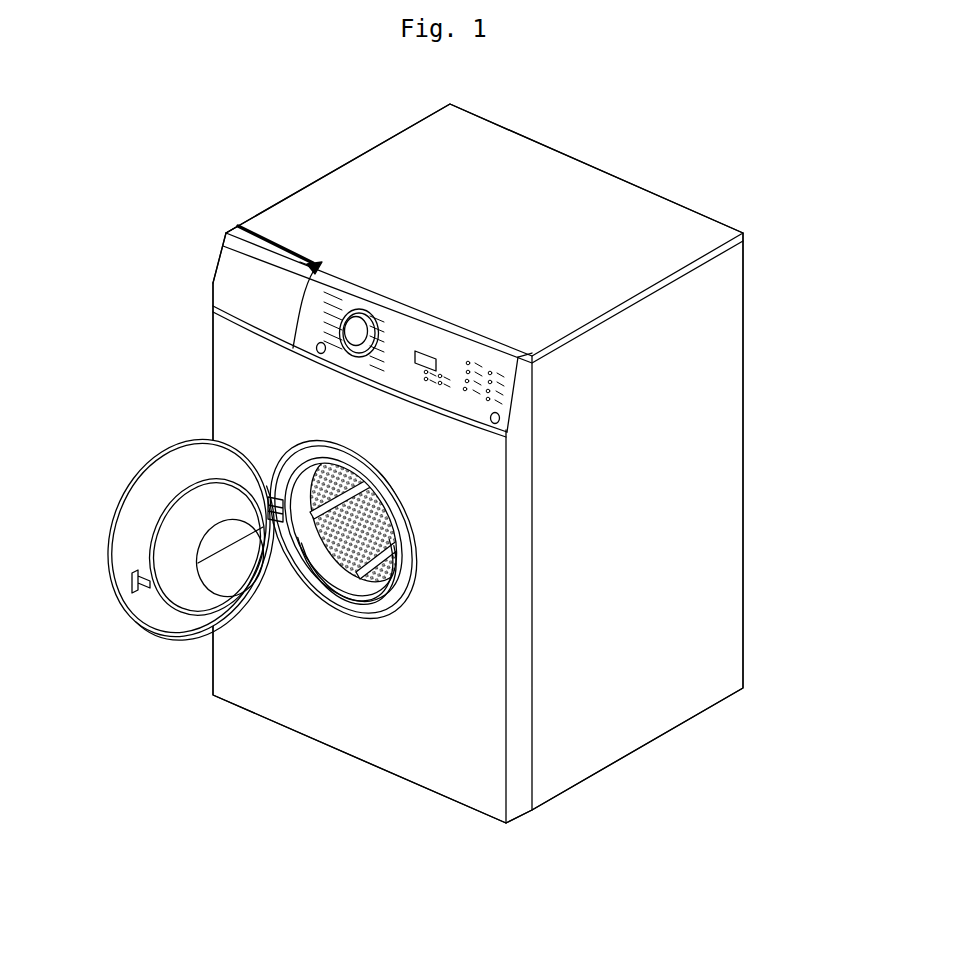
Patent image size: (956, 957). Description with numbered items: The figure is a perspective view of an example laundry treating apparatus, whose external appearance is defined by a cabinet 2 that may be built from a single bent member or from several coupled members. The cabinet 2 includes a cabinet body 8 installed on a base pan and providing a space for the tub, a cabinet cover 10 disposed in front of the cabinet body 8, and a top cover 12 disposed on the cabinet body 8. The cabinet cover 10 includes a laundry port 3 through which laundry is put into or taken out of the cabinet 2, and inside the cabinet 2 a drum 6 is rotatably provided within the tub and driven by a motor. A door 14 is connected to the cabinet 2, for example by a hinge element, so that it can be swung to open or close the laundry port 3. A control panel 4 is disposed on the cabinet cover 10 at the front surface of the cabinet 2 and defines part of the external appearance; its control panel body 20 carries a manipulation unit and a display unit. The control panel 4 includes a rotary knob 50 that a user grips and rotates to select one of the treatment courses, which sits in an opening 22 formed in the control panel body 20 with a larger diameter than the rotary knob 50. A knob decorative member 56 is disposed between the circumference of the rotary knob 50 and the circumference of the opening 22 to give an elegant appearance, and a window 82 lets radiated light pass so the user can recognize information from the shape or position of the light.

The cabinet 2 is at (752, 670).
The laundry port 3 is at (323, 563).
The control panel 4 is at (520, 395).
The drum 6 is at (375, 527).
The cabinet body 8 is at (643, 732).
The cabinet cover 10 is at (450, 763).
The top cover 12 is at (388, 158).
The door 14 is at (108, 572).
The control panel body 20 is at (328, 278).
The opening 22 is at (356, 341).
The rotary knob 50 is at (298, 325).
The knob decorative member 56 is at (315, 268).
The window 82 is at (353, 310).